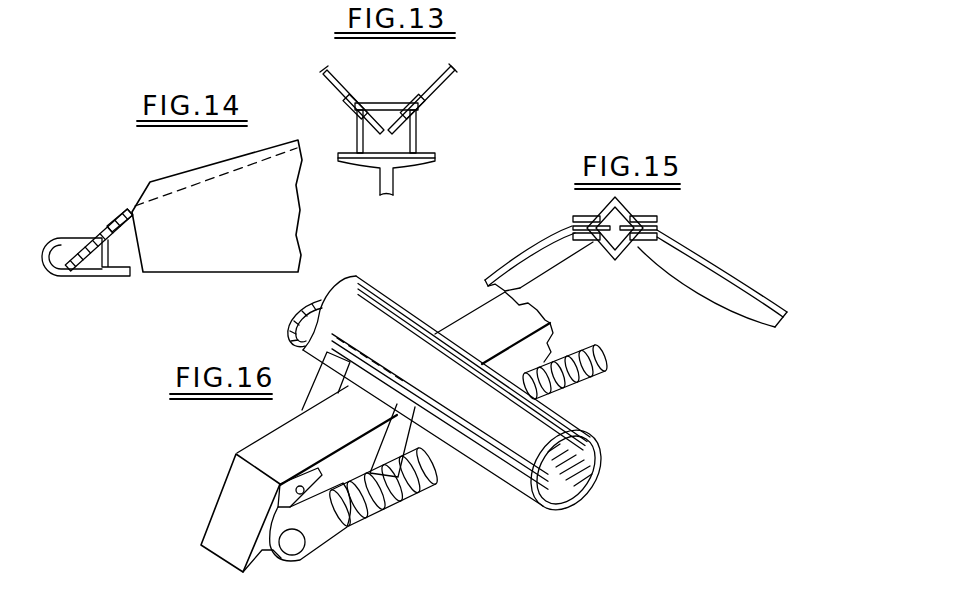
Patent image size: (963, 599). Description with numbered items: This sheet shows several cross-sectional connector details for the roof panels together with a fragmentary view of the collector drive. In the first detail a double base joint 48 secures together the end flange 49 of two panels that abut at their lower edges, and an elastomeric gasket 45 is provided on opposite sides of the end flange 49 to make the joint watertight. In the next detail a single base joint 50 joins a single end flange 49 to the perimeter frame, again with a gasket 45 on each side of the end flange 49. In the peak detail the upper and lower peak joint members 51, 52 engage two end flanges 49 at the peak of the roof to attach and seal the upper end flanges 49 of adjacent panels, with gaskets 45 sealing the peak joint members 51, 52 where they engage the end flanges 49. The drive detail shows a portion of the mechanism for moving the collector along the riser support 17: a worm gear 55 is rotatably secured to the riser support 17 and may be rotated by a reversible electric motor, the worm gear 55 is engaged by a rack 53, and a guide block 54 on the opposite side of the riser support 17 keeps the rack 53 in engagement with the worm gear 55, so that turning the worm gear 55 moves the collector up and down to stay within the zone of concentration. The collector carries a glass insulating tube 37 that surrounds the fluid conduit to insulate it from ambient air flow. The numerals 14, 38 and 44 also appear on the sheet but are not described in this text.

In FIG. 13, the guide rail 14 is at (392, 183).
In FIG. 16, the riser support 17 is at (255, 450).
In FIG. 16, the glass insulating tube 37 is at (602, 443).
In FIG. 15, the curved guide arm 38 is at (725, 278).
In FIG. 15, the support member 44 is at (760, 9).
In FIG. 13, the elastomeric gasket 45 is at (362, 100).
In FIG. 14, the elastomeric gasket 45 is at (102, 226).
In FIG. 15, the elastomeric gasket 45 is at (590, 218).
In FIG. 13, the double base joint 48 is at (358, 135).
In FIG. 13, the end flange 49 is at (443, 90).
In FIG. 14, the end flange 49 is at (124, 213).
In FIG. 14, the single base joint 50 is at (43, 268).
In FIG. 15, the upper peak joint member 51 is at (627, 218).
In FIG. 15, the lower peak joint member 52 is at (613, 260).
In FIG. 16, the rack 53 is at (398, 437).
In FIG. 16, the guide block 54 is at (323, 378).
In FIG. 16, the worm gear 55 is at (387, 510).